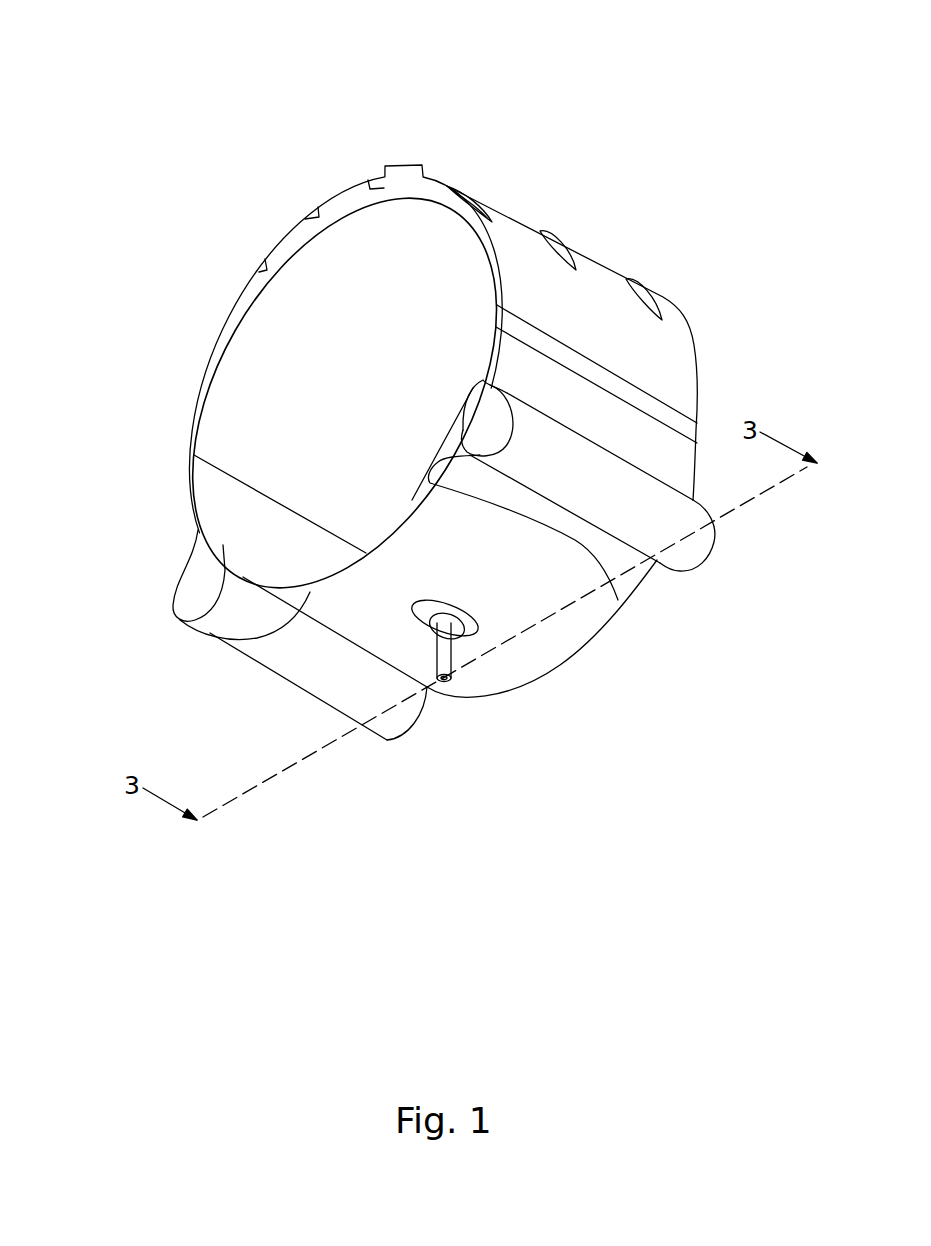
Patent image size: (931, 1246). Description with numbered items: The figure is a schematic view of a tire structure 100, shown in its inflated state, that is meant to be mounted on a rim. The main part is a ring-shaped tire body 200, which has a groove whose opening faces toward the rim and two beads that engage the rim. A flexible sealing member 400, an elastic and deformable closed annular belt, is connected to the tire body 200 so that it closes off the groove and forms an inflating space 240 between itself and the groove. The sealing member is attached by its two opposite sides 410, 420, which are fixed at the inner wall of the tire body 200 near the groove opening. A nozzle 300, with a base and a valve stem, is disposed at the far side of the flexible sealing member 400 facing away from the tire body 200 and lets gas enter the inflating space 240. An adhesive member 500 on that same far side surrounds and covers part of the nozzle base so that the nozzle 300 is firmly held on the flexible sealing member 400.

The tire structure 100 is at (692, 44).
The tire body 200 is at (670, 362).
The inflating space 240 is at (300, 380).
The nozzle 300 is at (450, 653).
The flexible sealing member 400 is at (207, 636).
The side of the flexible sealing member 410 is at (225, 500).
The side of the flexible sealing member 420 is at (618, 600).
The adhesive member 500 is at (468, 636).